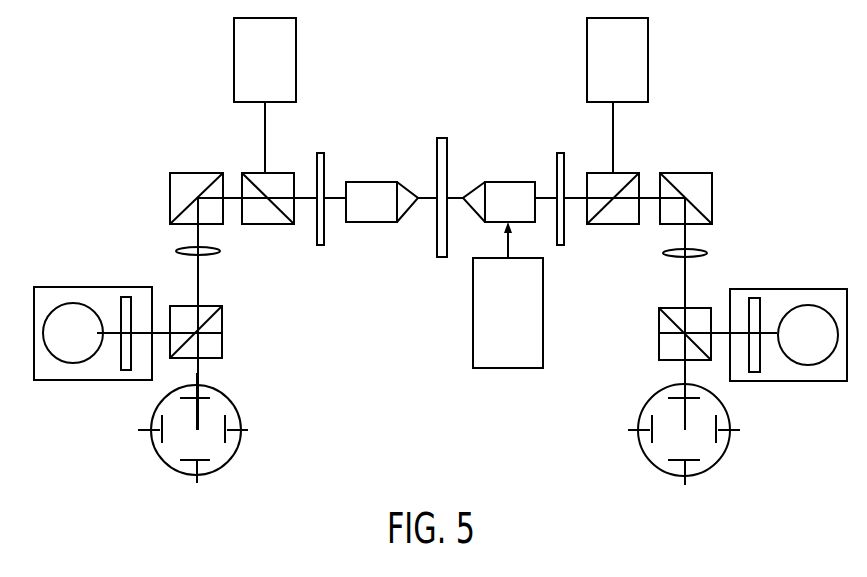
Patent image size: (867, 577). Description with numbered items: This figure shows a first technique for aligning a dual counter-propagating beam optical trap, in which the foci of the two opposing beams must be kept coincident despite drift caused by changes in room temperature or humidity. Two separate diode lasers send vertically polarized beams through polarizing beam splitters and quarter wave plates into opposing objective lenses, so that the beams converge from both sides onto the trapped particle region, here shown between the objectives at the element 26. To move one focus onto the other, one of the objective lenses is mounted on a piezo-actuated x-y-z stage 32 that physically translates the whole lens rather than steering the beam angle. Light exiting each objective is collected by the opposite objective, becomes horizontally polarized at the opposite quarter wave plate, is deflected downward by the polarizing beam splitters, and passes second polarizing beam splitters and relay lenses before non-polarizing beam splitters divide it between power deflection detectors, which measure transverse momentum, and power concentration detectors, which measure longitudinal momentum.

The sample 26 is at (447, 137).
The piezo-actuated x-y-z stage 32 is at (521, 287).